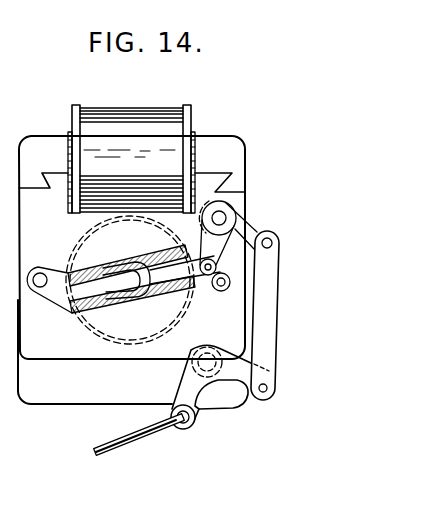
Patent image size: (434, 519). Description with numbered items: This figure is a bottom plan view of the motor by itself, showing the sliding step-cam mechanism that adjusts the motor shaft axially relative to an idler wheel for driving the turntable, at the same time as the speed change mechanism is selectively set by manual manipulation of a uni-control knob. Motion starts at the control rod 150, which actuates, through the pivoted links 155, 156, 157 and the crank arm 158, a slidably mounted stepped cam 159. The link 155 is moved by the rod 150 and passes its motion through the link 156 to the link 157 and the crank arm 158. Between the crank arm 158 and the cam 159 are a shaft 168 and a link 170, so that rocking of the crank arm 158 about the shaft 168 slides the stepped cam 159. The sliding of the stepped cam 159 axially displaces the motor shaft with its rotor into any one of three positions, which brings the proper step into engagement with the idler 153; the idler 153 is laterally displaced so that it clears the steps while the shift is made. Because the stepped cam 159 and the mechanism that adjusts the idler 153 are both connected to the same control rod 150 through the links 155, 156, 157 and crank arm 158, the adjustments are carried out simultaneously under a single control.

The control rod 150 is at (130, 443).
The idler 153 is at (163, 116).
The link 155 is at (193, 421).
The link 156 is at (273, 320).
The link 157 is at (254, 232).
The crank arm 158 is at (239, 220).
The stepped cam 159 is at (96, 266).
The shaft 168 is at (222, 216).
The link 170 is at (176, 270).